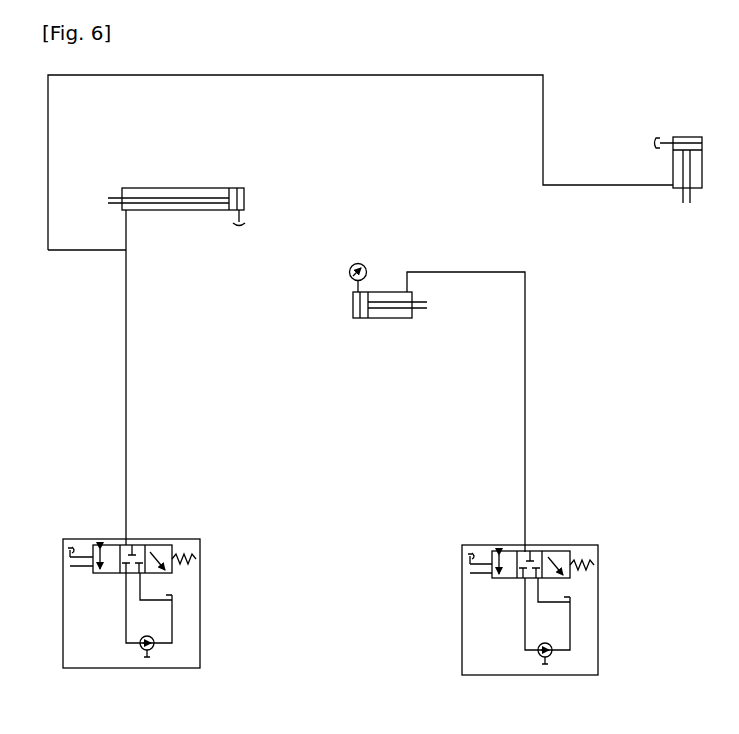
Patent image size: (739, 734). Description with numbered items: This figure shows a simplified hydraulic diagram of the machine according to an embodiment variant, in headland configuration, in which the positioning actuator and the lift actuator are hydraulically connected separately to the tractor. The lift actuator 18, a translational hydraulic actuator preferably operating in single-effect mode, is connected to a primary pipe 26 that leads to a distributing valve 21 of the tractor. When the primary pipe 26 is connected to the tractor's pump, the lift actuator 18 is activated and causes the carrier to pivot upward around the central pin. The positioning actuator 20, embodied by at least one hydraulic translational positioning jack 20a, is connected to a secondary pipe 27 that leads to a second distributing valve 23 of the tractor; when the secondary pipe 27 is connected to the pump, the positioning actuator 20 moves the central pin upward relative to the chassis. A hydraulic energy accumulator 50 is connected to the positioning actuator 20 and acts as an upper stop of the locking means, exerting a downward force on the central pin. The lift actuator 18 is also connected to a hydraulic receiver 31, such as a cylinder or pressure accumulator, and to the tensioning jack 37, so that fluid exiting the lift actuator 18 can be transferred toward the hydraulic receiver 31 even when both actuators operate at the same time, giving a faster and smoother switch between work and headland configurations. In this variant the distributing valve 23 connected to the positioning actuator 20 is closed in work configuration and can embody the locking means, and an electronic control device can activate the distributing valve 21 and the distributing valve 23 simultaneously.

The lift actuator 18 is at (208, 190).
The primary pipe 26 is at (125, 393).
The hydraulic receiver 31 is at (671, 142).
The tensioning jack 37 is at (688, 140).
The positioning actuator 20 is at (403, 270).
The positioning jack 20a is at (380, 300).
The hydraulic energy accumulator 50 is at (356, 262).
The secondary pipe 27 is at (527, 480).
The distributing valve 21 is at (180, 548).
The distributing valve 23 is at (580, 554).